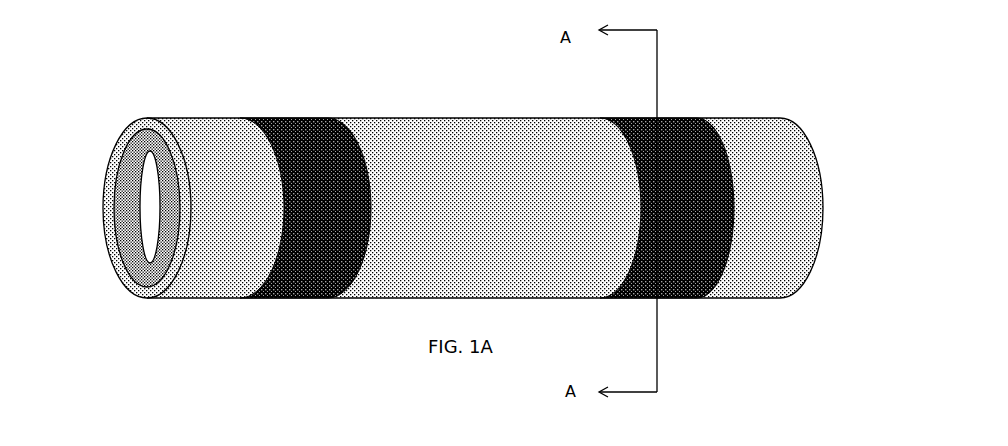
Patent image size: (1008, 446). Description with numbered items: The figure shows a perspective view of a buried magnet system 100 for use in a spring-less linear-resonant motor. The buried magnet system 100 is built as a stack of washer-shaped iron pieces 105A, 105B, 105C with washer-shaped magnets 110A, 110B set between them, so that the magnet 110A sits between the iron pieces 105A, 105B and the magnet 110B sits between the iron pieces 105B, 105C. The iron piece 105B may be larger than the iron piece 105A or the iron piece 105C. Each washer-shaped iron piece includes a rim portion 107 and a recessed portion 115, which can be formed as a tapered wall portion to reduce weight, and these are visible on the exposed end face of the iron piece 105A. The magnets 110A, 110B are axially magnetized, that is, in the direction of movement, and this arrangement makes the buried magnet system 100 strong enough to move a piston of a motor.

The buried magnet system 100 is at (145, 90).
The washer-shaped iron piece 105A is at (232, 120).
The washer-shaped iron piece 105B is at (505, 120).
The washer-shaped iron piece 105C is at (745, 118).
The washer-shaped magnet 110A is at (327, 118).
The washer-shaped magnet 110B is at (623, 118).
The rim portion 107 is at (112, 170).
The recessed portion 115 is at (125, 217).